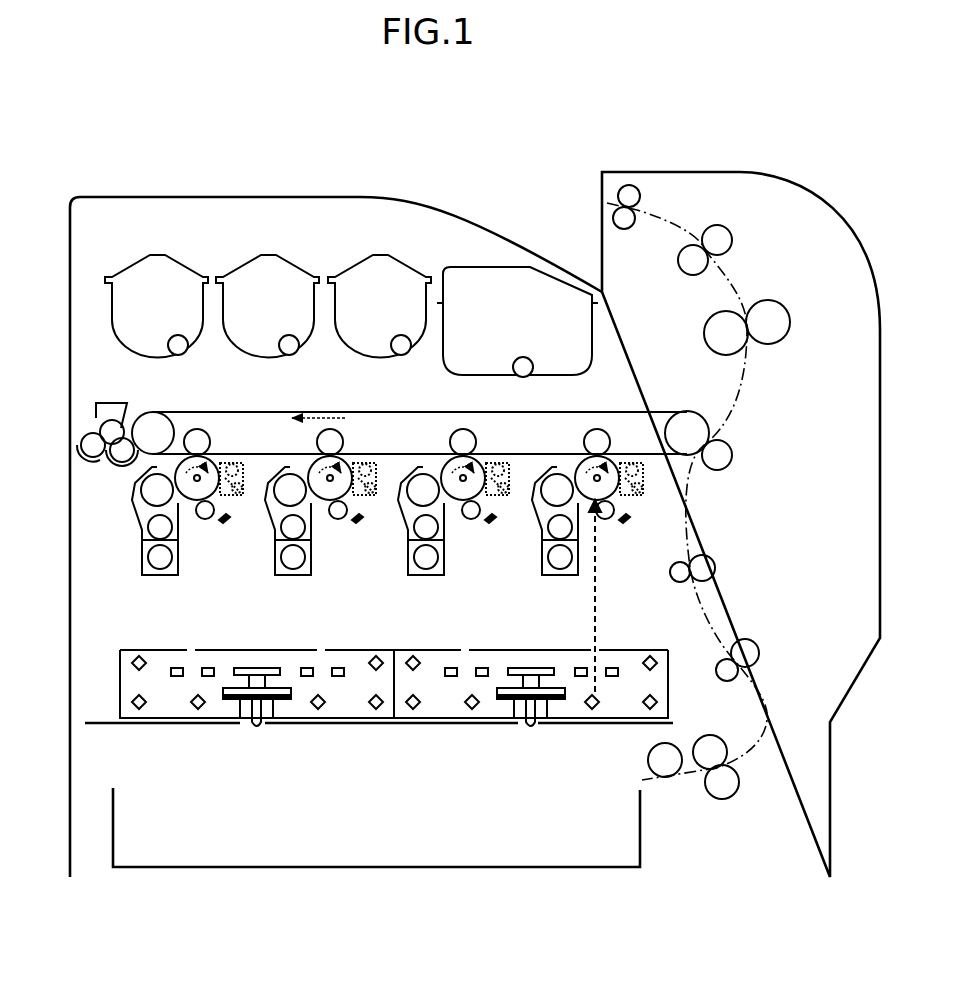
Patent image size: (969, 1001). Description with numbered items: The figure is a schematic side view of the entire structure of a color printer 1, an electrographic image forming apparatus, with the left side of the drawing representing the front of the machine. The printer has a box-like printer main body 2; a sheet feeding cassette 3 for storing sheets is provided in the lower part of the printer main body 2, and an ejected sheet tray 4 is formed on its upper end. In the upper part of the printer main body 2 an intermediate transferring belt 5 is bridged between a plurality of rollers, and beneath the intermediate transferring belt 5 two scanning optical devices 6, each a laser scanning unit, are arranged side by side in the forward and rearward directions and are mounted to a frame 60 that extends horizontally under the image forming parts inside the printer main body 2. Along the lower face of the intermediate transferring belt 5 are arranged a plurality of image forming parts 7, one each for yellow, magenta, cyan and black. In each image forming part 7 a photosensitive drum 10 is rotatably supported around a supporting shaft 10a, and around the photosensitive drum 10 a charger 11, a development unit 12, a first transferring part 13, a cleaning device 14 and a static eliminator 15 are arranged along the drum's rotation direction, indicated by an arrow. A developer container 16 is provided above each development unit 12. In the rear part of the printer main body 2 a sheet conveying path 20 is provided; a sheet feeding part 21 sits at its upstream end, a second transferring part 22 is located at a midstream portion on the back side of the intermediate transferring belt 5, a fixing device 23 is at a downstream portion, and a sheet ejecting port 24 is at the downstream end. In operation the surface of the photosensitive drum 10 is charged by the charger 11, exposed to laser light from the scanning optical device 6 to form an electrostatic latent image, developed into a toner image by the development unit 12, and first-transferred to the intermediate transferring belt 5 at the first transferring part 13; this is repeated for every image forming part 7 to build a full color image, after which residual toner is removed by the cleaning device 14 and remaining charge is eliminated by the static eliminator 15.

The color printer 1 is at (107, 120).
The printer main body 2 is at (100, 197).
The sheet feeding cassette 3 is at (113, 825).
The ejected sheet tray 4 is at (430, 208).
The intermediate transferring belt 5 is at (585, 412).
The scanning optical device 6 is at (412, 719).
The image forming part 7 is at (133, 571).
The photosensitive drum 10 is at (577, 462).
The supporting shaft 10a is at (602, 485).
The charger 11 is at (609, 520).
The development unit 12 is at (536, 468).
The first transferring part 13 is at (617, 448).
The cleaning device 14 is at (650, 483).
The static eliminator 15 is at (633, 523).
The developer container 16 is at (157, 238).
The sheet conveying path 20 is at (688, 530).
The sheet feeding part 21 is at (747, 779).
The second transferring part 22 is at (730, 476).
The fixing device 23 is at (775, 351).
The sheet ejecting port 24 is at (600, 190).
The frame 60 is at (445, 727).